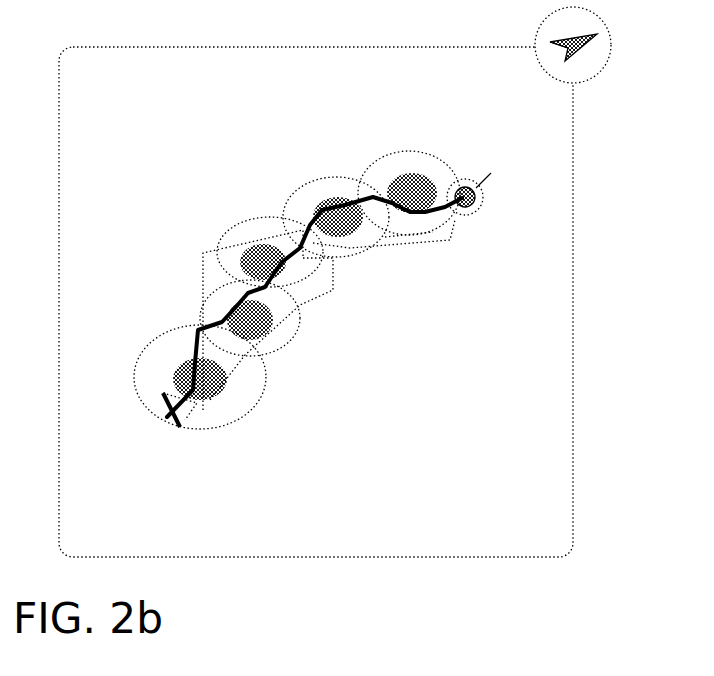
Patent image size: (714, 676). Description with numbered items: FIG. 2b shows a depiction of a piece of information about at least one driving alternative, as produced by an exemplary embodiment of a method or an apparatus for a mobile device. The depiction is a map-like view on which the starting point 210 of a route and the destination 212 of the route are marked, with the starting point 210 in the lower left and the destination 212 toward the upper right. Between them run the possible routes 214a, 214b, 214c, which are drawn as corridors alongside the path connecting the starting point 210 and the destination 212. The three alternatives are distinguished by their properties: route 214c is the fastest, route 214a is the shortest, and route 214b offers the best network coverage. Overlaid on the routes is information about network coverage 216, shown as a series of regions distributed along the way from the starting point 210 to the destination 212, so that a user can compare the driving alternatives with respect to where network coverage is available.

The starting point 210 is at (166, 424).
The destination 212 is at (470, 206).
The possible route 214a is at (333, 290).
The possible route 214b is at (363, 260).
The possible route 214c is at (200, 275).
The network coverage 216 is at (302, 190).